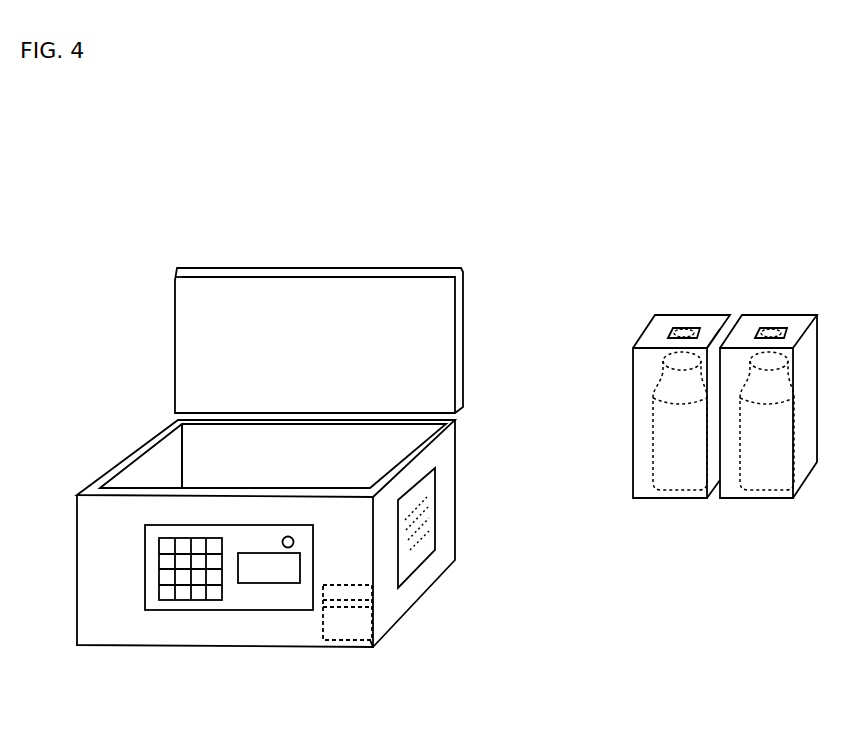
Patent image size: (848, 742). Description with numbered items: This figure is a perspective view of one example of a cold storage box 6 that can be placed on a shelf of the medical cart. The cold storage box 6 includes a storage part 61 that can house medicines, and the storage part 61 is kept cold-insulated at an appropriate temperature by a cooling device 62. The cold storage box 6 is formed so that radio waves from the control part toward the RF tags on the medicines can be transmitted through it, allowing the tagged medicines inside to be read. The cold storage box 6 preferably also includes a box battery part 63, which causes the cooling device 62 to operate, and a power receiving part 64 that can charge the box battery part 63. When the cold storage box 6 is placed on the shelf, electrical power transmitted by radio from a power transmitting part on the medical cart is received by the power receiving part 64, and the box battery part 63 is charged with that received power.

The cold storage box 6 is at (207, 260).
The storage part 61 is at (215, 462).
The cooling device 62 is at (435, 528).
The box battery part 63 is at (375, 600).
The power receiving part 64 is at (376, 650).